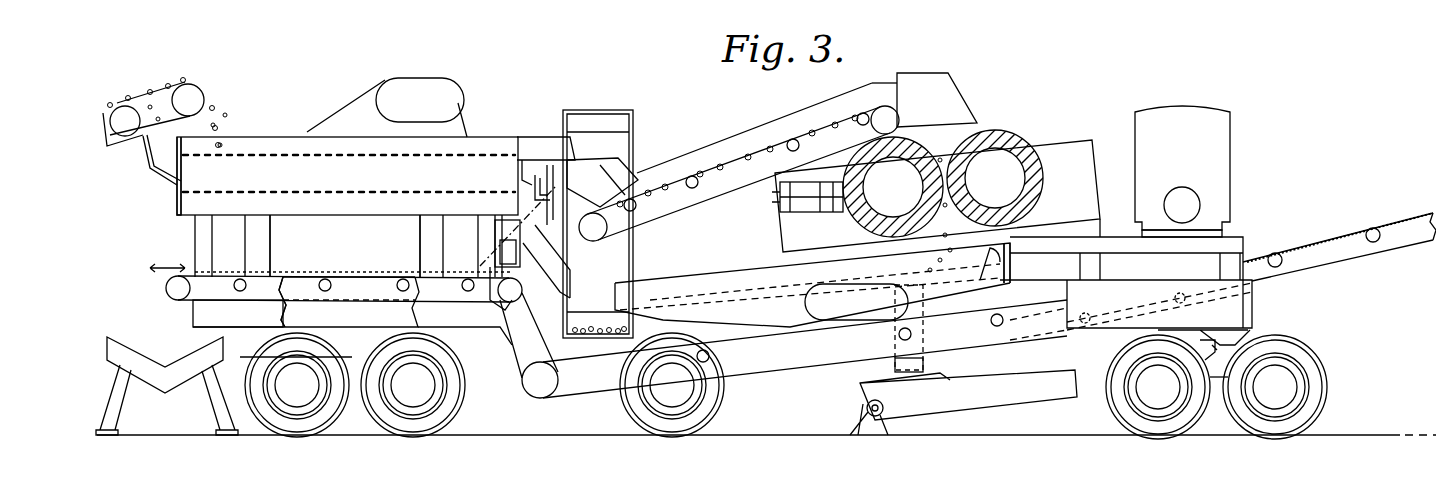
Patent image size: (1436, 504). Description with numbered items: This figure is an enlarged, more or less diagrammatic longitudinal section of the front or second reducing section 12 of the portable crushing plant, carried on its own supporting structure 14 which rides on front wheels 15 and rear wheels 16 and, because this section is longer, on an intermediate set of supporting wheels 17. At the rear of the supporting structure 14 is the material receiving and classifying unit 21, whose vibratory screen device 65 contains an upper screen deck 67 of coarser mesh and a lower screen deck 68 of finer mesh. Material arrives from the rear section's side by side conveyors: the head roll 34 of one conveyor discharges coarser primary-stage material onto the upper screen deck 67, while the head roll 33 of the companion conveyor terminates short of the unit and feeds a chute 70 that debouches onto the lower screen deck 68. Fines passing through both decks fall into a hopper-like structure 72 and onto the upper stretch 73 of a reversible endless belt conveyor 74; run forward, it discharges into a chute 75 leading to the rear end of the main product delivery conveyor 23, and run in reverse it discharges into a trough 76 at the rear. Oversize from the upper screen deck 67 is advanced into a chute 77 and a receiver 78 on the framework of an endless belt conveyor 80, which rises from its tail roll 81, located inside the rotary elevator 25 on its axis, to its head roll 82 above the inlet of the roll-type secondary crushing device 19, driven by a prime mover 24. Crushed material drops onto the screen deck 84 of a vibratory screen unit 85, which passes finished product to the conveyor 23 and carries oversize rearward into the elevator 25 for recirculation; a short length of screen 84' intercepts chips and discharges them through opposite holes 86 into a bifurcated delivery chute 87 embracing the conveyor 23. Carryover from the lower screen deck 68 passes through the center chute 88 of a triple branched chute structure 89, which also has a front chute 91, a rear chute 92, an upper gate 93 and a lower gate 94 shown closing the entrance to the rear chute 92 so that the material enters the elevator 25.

The second reducing section 12 is at (690, 114).
The supporting structure 14 is at (603, 402).
The front wheels 15 is at (1312, 350).
The rear wheels 16 is at (346, 420).
The intermediate set of supporting wheels 17 is at (723, 414).
The secondary crushing device 19 is at (987, 125).
The material receiving and classifying unit 21 is at (257, 102).
The main product delivery conveyor 23 is at (1330, 232).
The prime mover 24 is at (1187, 112).
The elevator 25 is at (612, 110).
The head roll 33 is at (138, 92).
The head roll 34 is at (207, 70).
The vibratory screen device 65 is at (176, 206).
The upper screen deck 67 is at (276, 152).
The lower screen deck 68 is at (233, 190).
The chute 70 is at (158, 167).
The hopper-like structure 72 is at (378, 257).
The upper stretch 73 is at (283, 277).
The endless belt conveyor 74 is at (166, 288).
The chute 75 is at (508, 340).
The trough 76 is at (161, 366).
The chute 77 is at (548, 140).
The receiver 78 is at (633, 152).
The endless belt conveyor 80 is at (748, 150).
The tail roll 81 is at (607, 227).
The head roll 82 is at (882, 106).
The screen deck 84 is at (812, 285).
The short length of screen 84' is at (1020, 263).
The vibratory screen unit 85 is at (752, 286).
The holes 86 is at (1000, 296).
The bifurcated delivery chute 87 is at (930, 363).
The center chute 88 is at (575, 283).
The triple branched chute structure 89 is at (572, 266).
The front chute 91 is at (563, 170).
The rear chute 92 is at (500, 258).
The upper gate 93 is at (527, 158).
The lower gate 94 is at (500, 233).